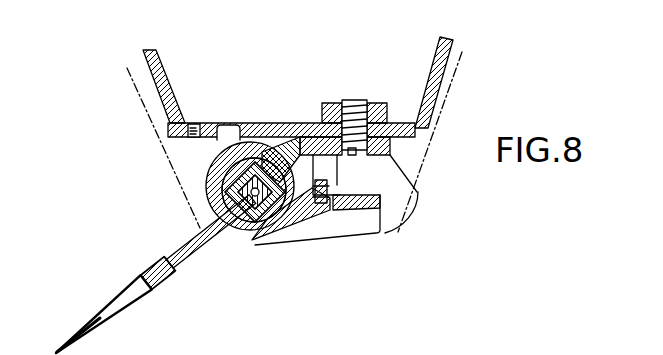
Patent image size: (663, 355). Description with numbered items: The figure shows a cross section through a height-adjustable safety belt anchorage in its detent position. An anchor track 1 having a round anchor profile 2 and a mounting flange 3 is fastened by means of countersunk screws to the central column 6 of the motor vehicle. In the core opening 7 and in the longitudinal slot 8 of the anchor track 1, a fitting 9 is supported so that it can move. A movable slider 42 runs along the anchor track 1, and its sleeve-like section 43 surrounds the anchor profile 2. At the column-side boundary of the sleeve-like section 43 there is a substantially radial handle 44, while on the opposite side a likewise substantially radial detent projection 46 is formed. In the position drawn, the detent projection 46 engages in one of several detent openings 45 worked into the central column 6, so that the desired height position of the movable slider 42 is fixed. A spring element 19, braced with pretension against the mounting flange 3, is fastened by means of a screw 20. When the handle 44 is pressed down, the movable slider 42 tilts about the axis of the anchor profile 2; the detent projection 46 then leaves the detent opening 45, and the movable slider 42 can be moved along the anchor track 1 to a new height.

The anchor track 1 is at (402, 150).
The round anchor profile 2 is at (257, 246).
The mounting flange 3 is at (412, 199).
The central column 6 is at (436, 68).
The core opening 7 is at (300, 145).
The longitudinal slot 8 is at (228, 242).
The fitting 9 is at (186, 246).
The spring element 19 is at (338, 177).
The screw 20 is at (335, 212).
The movable slider 42 is at (200, 162).
The sleeve-like section 43 is at (205, 195).
The handle 44 is at (353, 226).
The detent opening 45 is at (189, 121).
The detent projection 46 is at (228, 126).